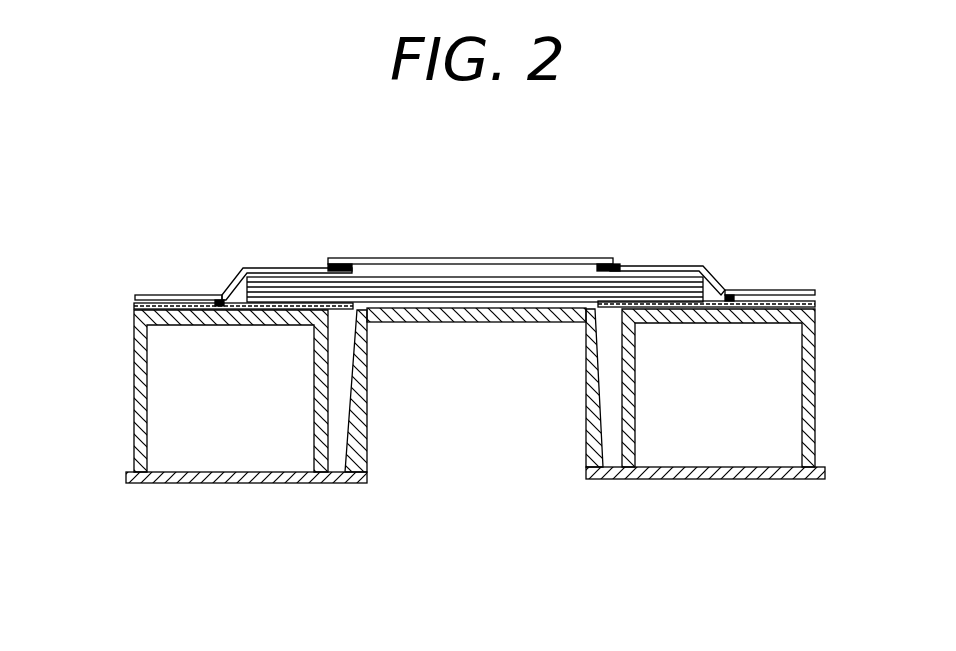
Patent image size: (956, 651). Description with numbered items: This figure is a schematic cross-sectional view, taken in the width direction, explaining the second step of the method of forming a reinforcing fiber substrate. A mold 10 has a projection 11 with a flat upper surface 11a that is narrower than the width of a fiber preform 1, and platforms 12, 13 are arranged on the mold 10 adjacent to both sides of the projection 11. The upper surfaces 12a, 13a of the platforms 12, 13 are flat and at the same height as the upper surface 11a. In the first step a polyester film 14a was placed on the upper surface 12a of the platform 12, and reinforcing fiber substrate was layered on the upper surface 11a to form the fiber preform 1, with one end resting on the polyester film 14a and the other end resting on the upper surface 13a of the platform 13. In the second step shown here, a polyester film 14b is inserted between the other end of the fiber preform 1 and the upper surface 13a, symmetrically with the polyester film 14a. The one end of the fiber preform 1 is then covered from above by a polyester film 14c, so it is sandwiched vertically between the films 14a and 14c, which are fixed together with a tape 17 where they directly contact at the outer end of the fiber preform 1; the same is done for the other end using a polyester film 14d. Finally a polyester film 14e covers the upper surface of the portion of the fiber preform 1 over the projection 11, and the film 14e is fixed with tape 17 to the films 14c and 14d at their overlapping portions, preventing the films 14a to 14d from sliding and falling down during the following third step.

The fiber preform 1 is at (475, 251).
The mold 10 is at (473, 512).
The projection 11 is at (422, 286).
The upper surface of the projection 11a is at (537, 293).
The platform 12 is at (140, 402).
The upper surface of the platform 12a is at (135, 297).
The platform 13 is at (810, 385).
The upper surface of the platform 13a is at (817, 301).
The polyester film 14a is at (173, 297).
The polyester film 14b is at (773, 292).
The polyester film 14c is at (283, 268).
The polyester film 14d is at (678, 266).
The polyester film 14e is at (528, 258).
The tape 17 is at (218, 300).